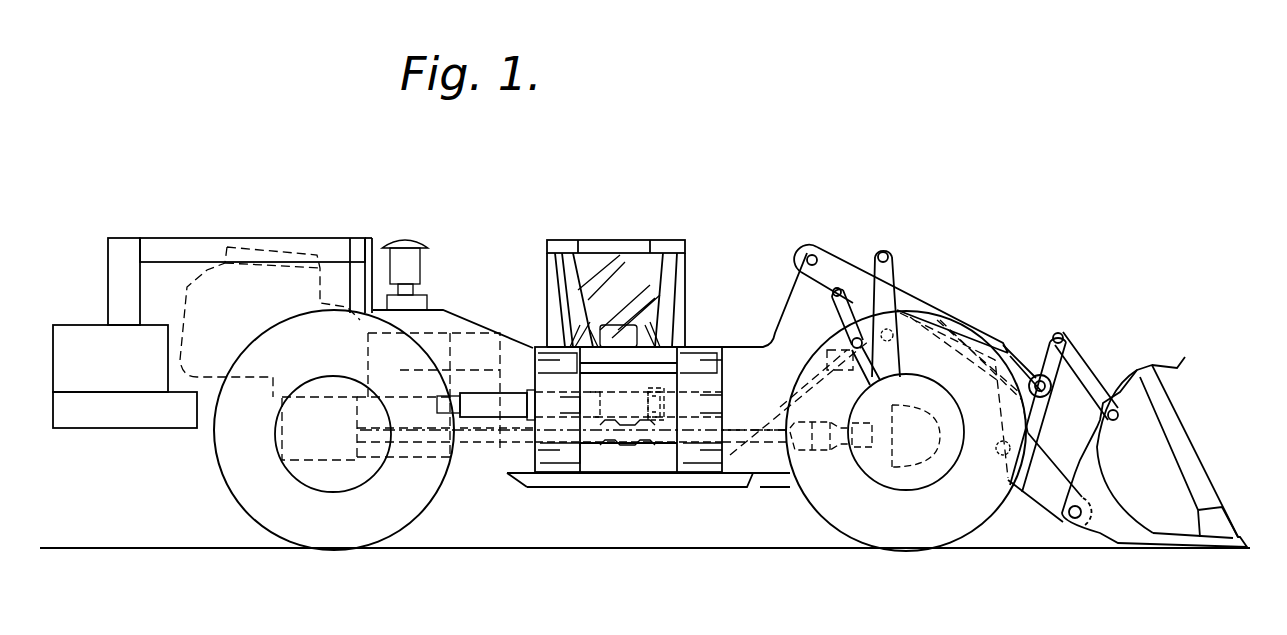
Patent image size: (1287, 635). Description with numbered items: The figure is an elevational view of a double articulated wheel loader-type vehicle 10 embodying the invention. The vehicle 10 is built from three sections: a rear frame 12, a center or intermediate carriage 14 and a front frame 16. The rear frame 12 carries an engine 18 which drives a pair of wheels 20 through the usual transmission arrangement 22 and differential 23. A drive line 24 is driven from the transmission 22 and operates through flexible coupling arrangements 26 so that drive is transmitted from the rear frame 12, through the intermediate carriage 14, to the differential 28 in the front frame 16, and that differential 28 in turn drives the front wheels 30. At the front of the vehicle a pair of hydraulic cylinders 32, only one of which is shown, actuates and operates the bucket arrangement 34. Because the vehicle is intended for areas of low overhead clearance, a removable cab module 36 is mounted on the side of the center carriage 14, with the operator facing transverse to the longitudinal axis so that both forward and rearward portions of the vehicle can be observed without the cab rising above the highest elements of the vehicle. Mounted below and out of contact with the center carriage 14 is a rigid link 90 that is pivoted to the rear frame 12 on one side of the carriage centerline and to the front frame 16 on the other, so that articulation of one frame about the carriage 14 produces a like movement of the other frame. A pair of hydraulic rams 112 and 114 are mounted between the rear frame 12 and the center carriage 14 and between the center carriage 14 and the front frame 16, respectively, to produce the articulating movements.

The double articulated wheel loader-type vehicle 10 is at (737, 190).
The rear frame 12 is at (372, 238).
The center or intermediate carriage 14 is at (650, 460).
The front frame 16 is at (800, 310).
The engine 18 is at (252, 280).
The wheels 20 is at (237, 483).
The transmission arrangement 22 is at (470, 450).
The differential 23 is at (297, 440).
The drive line 24 is at (515, 437).
The flexible coupling arrangements 26 is at (605, 442).
The differential 28 is at (920, 453).
The front wheels 30 is at (893, 527).
The hydraulic cylinders 32 is at (757, 407).
The bucket arrangement 34 is at (1143, 375).
The removable cab module 36 is at (608, 238).
The rigid link 90 is at (603, 447).
The hydraulic ram 112 is at (483, 400).
The hydraulic ram 114 is at (633, 400).